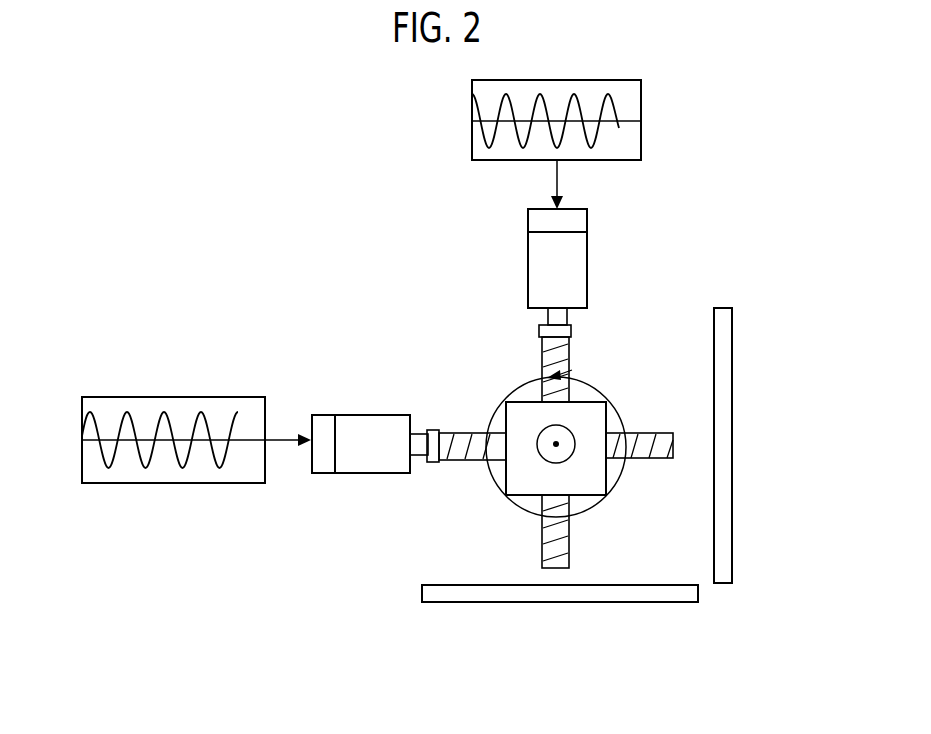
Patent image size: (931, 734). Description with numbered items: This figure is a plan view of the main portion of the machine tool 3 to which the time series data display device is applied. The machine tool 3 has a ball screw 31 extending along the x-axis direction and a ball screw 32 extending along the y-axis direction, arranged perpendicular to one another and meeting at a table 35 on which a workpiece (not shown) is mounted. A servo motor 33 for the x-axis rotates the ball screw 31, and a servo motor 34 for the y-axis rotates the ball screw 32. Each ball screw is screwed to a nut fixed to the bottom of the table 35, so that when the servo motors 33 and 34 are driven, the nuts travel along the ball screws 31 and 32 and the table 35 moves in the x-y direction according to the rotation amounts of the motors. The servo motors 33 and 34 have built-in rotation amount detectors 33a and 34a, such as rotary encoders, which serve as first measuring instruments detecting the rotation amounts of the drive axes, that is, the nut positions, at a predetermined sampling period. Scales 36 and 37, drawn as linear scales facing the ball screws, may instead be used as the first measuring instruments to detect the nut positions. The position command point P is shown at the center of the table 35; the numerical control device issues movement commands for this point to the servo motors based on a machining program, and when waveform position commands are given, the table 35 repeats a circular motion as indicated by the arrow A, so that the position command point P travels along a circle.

The machine tool 3 is at (782, 191).
The ball screw 31 is at (459, 433).
The ball screw 32 is at (570, 545).
The servo motor for the x-axis 33 is at (372, 415).
The rotation amount detector 33a is at (319, 415).
The servo motor for the y-axis 34 is at (587, 247).
The rotation amount detector 34a is at (528, 220).
The table 35 is at (519, 397).
The scale 36 is at (648, 602).
The scale 37 is at (732, 345).
The position command point P is at (553, 446).
The arrow A is at (574, 371).